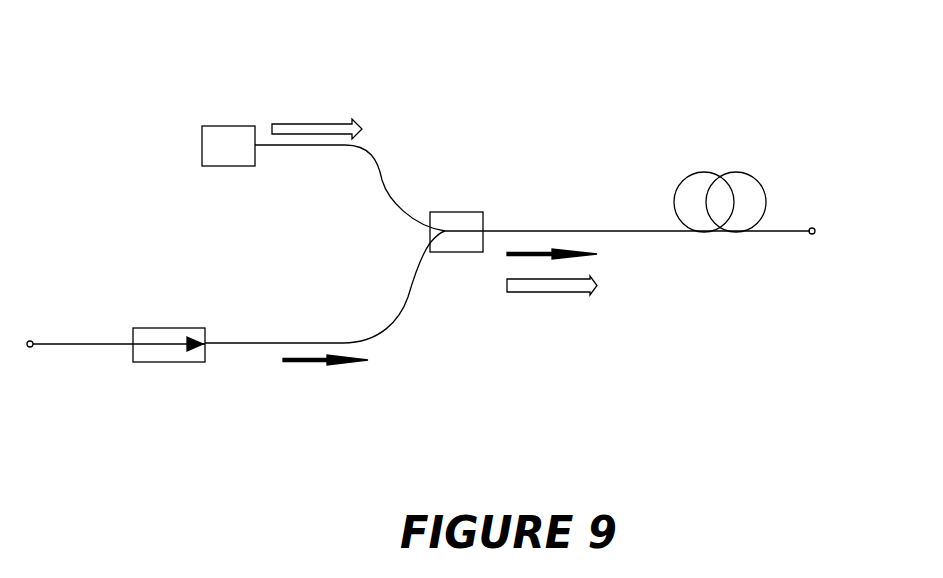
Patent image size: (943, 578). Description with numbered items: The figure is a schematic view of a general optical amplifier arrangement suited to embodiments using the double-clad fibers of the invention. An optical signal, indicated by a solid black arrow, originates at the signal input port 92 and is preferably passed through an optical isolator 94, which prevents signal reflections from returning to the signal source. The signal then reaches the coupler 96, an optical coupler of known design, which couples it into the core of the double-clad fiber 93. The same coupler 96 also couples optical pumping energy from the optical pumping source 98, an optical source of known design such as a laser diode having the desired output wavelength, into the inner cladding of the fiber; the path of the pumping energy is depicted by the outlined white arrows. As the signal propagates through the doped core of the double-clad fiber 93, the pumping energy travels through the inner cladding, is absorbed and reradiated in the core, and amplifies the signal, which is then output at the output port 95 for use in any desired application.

The signal input port 92 is at (30, 348).
The double-clad fiber 93 is at (748, 174).
The optical isolator 94 is at (170, 362).
The output port 95 is at (815, 227).
The coupler 96 is at (455, 212).
The optical pumping source 98 is at (229, 126).